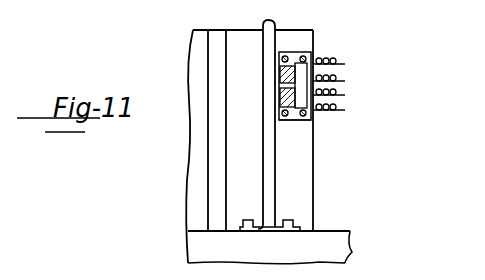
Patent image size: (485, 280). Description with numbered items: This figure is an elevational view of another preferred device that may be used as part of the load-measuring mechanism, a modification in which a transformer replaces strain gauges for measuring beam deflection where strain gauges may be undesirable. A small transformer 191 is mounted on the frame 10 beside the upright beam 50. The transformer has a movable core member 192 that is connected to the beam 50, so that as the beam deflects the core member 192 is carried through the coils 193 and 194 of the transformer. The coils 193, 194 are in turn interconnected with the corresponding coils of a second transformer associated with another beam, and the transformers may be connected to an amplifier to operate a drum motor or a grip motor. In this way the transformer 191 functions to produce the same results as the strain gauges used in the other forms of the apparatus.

The frame 10 is at (336, 237).
The beam 50 is at (264, 36).
The small transformer 191 is at (349, 83).
The movable core member 192 is at (295, 85).
The coil 193 is at (294, 66).
The coil 194 is at (284, 104).